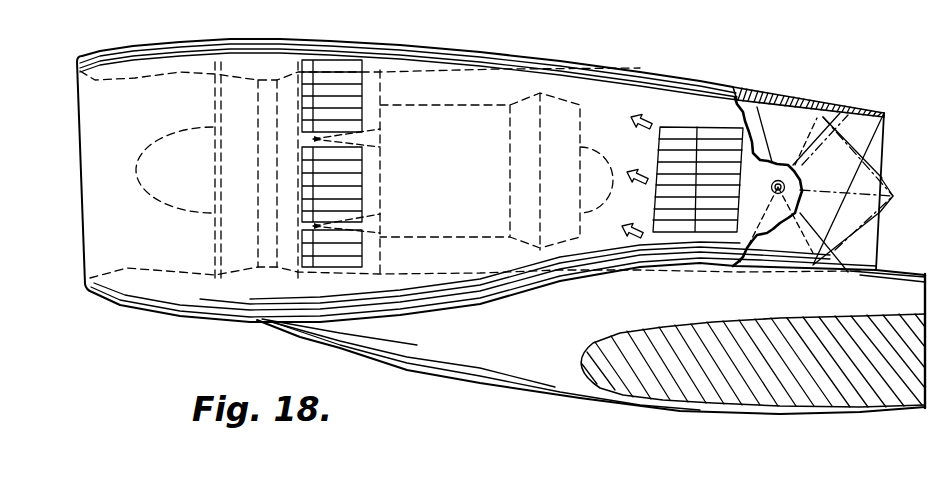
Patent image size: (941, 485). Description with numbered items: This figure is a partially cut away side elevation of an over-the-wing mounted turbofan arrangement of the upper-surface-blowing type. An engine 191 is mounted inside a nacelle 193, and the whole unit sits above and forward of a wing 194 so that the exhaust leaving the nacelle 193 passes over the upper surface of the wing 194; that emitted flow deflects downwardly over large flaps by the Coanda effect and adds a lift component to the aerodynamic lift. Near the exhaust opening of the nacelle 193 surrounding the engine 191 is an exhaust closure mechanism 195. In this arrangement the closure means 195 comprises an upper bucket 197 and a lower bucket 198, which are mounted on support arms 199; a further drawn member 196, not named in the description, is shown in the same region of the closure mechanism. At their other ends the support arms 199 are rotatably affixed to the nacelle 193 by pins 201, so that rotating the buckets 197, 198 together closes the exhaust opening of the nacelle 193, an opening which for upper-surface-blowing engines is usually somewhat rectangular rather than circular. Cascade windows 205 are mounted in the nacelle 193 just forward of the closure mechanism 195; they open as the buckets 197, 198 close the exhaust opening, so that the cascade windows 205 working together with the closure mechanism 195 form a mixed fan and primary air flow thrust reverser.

The engine 191 is at (435, 125).
The nacelle 193 is at (373, 55).
The wing 194 is at (852, 393).
The exhaust closure mechanism 195 is at (788, 127).
The strut 196 is at (752, 97).
The upper bucket 197 is at (827, 112).
The lower bucket 198 is at (798, 273).
The support arms 199 is at (840, 137).
The pins 201 is at (732, 243).
The cascade windows 205 is at (663, 125).